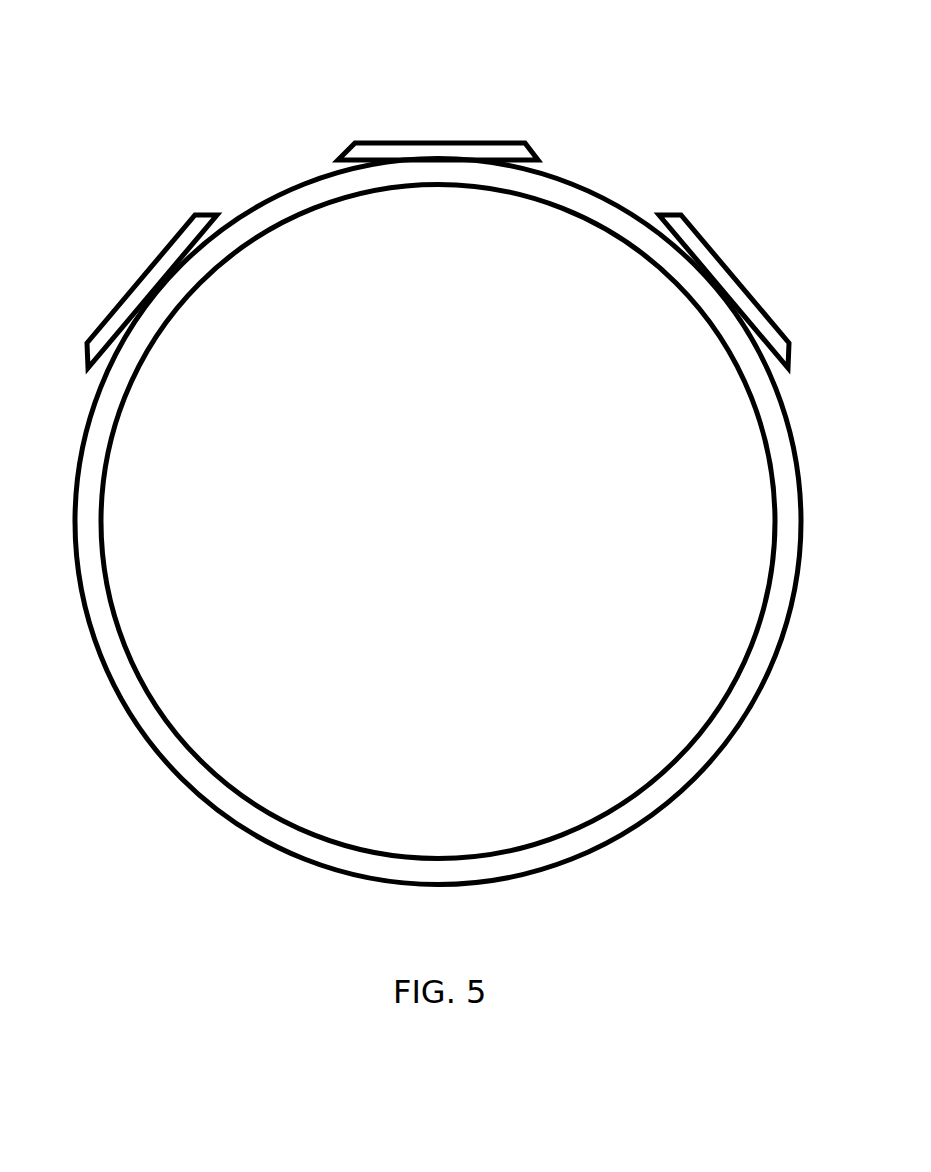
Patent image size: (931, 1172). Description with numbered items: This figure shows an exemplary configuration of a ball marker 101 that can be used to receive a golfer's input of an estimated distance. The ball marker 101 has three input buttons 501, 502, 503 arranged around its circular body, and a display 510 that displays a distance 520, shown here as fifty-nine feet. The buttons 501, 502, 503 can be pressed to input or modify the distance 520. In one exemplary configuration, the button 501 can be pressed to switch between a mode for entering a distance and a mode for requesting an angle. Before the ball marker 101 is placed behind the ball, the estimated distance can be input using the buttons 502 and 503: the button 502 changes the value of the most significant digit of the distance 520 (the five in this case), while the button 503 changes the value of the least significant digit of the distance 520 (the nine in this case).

The ball marker 101 is at (456, 38).
The button 501 is at (347, 147).
The button 502 is at (162, 250).
The button 503 is at (703, 238).
The display 510 is at (170, 730).
The distance 520 is at (430, 588).